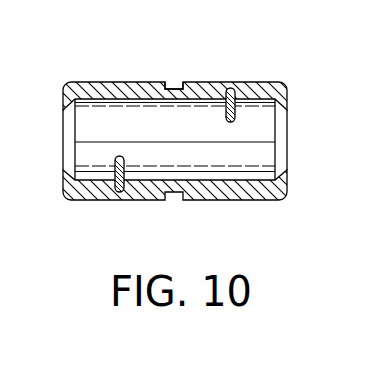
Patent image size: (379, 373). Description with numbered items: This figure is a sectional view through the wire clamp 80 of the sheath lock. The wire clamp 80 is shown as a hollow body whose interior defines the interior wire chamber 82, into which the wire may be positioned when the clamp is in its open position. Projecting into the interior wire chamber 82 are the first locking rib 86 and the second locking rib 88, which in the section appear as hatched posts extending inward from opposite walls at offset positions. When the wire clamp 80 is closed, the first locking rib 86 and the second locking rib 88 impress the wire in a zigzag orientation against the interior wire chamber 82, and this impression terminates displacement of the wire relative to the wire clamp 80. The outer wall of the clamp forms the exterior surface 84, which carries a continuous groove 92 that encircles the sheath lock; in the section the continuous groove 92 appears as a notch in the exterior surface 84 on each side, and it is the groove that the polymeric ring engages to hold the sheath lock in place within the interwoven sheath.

The wire clamp 80 is at (230, 199).
The interior wire chamber 82 is at (253, 133).
The exterior surface 84 is at (93, 82).
The first locking rib 86 is at (227, 98).
The second locking rib 88 is at (115, 170).
The continuous groove 92 is at (166, 83).